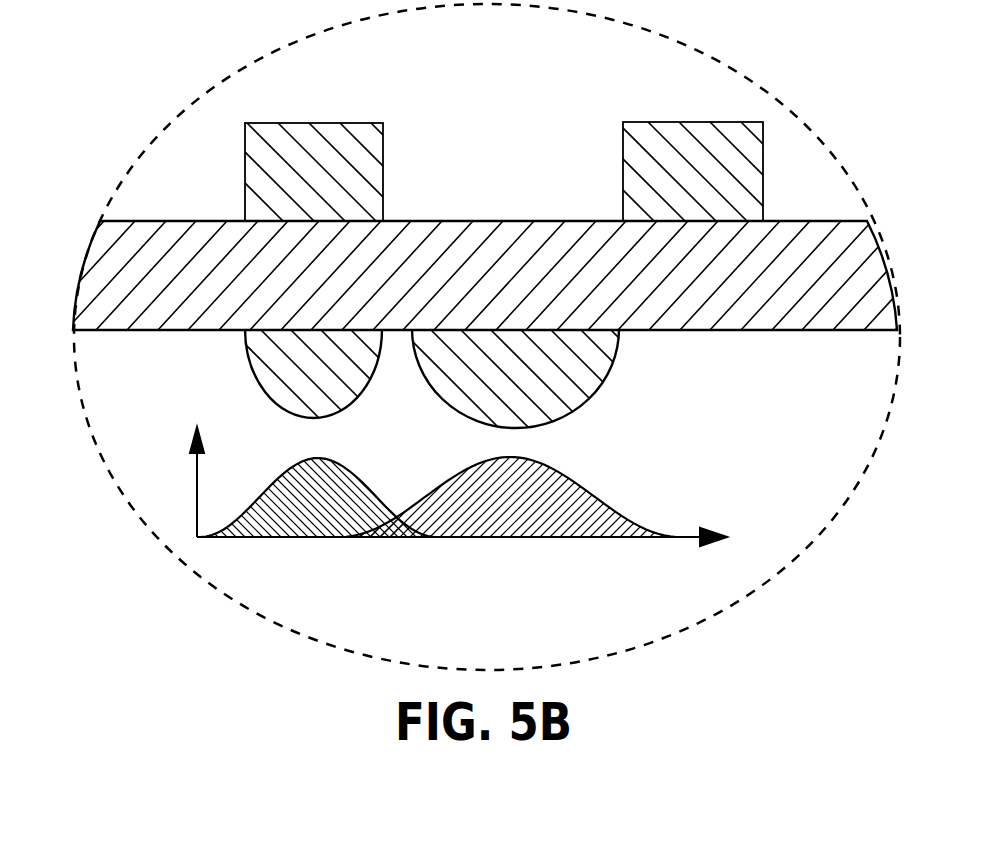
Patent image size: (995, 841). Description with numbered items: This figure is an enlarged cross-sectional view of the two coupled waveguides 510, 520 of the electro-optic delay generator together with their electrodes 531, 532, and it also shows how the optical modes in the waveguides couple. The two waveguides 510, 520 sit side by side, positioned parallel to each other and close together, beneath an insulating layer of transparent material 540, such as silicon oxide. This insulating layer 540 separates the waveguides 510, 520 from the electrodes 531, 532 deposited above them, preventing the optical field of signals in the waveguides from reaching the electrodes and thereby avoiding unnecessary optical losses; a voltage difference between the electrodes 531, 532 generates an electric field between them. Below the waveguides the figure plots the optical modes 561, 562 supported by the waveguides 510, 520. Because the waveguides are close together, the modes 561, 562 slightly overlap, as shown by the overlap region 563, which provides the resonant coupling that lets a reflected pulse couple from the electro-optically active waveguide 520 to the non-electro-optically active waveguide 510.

The waveguide 510 is at (262, 376).
The waveguide 520 is at (600, 375).
The electrode 531 is at (362, 130).
The electrode 532 is at (645, 132).
The insulating layer of transparent material 540 is at (530, 221).
The optical mode 561 is at (297, 478).
The optical mode 562 is at (588, 494).
The overlap region 563 is at (386, 530).